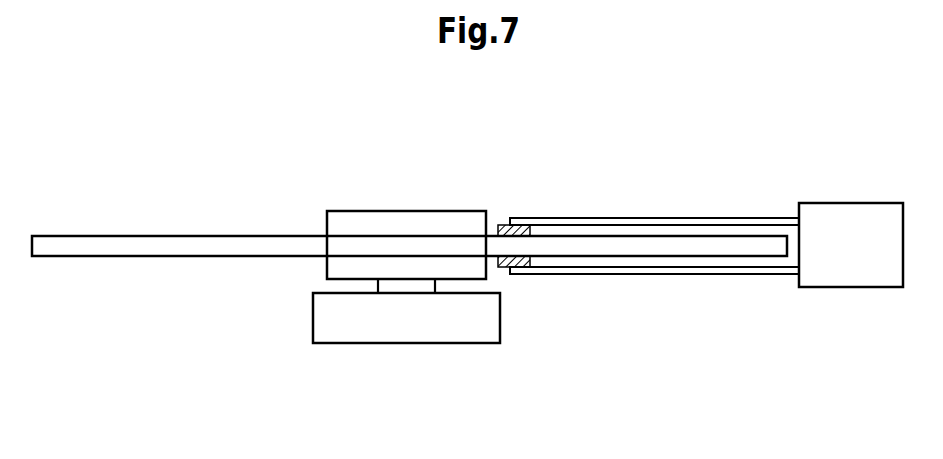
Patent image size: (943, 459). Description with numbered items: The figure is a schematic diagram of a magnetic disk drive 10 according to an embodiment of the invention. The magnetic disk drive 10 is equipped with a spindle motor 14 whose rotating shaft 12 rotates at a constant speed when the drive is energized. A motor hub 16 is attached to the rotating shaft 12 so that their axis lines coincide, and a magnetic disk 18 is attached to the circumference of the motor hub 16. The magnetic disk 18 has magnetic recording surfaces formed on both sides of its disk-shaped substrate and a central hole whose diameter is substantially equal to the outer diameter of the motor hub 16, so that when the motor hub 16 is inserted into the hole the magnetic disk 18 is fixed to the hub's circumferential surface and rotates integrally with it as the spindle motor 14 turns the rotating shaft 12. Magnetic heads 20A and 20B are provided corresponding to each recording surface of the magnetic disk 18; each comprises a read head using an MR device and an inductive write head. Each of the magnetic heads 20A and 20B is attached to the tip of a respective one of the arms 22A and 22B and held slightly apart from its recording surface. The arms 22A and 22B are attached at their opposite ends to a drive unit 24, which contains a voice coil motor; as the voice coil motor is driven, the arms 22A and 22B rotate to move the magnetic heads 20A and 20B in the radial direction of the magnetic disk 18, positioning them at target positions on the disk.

The magnetic disk drive 10 is at (149, 177).
The rotating shaft 12 is at (376, 289).
The spindle motor 14 is at (404, 344).
The motor hub 16 is at (404, 213).
The magnetic disk 18 is at (80, 236).
The magnetic head 20A is at (505, 223).
The magnetic head 20B is at (505, 268).
The arm 22A is at (652, 218).
The arm 22B is at (640, 275).
The drive unit 24 is at (845, 203).